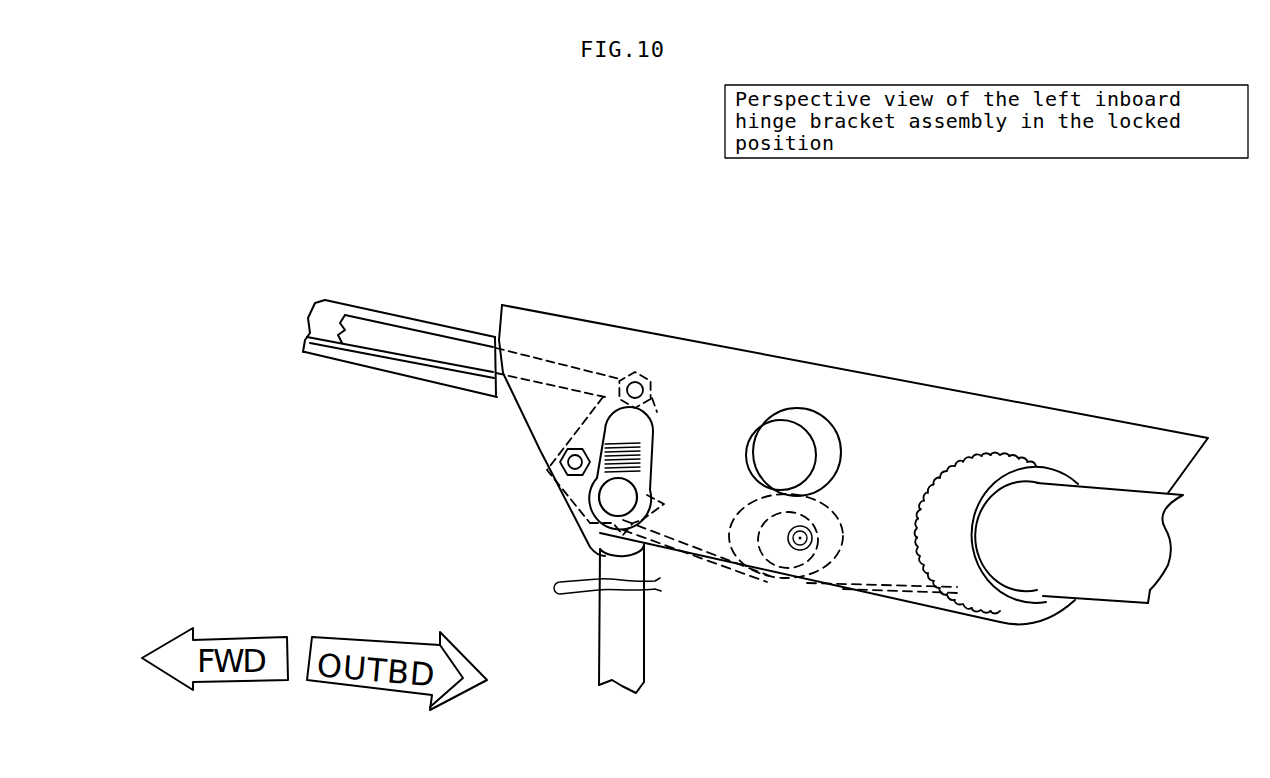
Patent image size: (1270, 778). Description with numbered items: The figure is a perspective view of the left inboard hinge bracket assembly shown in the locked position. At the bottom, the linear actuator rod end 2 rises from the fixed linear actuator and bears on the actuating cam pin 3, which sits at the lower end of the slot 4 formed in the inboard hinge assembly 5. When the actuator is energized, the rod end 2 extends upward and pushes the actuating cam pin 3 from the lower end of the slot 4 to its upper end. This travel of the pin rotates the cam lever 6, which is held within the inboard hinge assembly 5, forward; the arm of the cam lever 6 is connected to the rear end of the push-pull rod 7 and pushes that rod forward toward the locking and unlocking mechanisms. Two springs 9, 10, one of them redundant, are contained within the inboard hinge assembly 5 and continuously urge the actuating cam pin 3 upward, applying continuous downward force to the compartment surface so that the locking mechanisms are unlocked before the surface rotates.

The linear actuator rod end 2 is at (597, 642).
The actuating cam pin 3 is at (617, 497).
The slot 4 is at (657, 457).
The inboard hinge assembly 5 is at (947, 412).
The cam lever 6 is at (590, 435).
The push-pull rod 7 is at (433, 345).
The spring 9 is at (767, 575).
The spring 10 is at (820, 585).